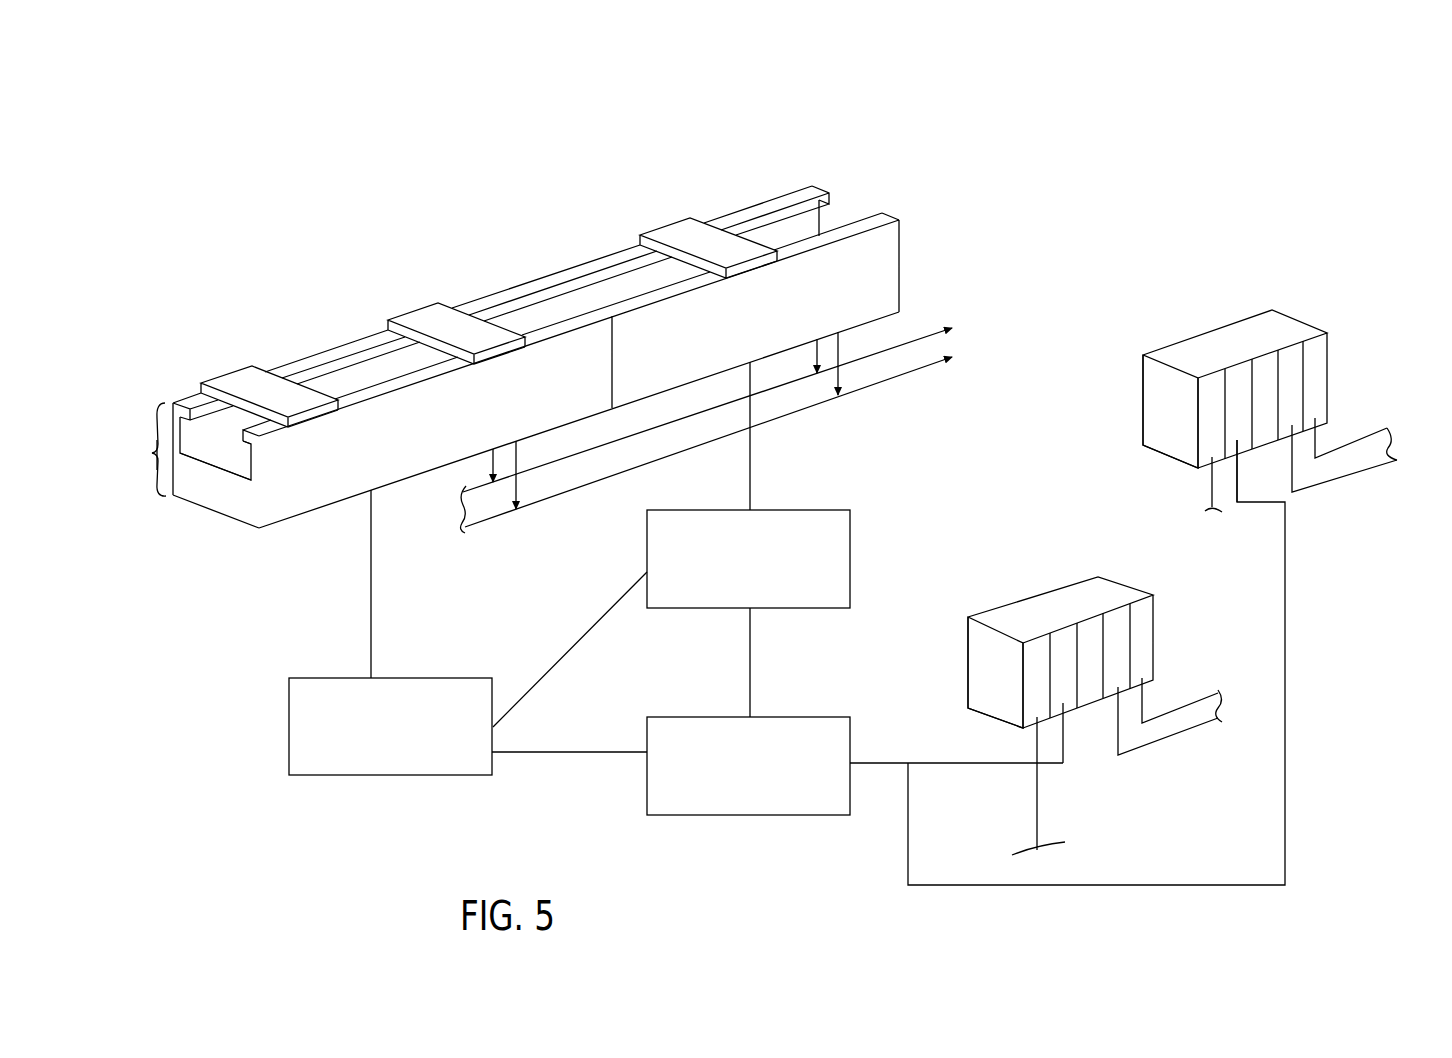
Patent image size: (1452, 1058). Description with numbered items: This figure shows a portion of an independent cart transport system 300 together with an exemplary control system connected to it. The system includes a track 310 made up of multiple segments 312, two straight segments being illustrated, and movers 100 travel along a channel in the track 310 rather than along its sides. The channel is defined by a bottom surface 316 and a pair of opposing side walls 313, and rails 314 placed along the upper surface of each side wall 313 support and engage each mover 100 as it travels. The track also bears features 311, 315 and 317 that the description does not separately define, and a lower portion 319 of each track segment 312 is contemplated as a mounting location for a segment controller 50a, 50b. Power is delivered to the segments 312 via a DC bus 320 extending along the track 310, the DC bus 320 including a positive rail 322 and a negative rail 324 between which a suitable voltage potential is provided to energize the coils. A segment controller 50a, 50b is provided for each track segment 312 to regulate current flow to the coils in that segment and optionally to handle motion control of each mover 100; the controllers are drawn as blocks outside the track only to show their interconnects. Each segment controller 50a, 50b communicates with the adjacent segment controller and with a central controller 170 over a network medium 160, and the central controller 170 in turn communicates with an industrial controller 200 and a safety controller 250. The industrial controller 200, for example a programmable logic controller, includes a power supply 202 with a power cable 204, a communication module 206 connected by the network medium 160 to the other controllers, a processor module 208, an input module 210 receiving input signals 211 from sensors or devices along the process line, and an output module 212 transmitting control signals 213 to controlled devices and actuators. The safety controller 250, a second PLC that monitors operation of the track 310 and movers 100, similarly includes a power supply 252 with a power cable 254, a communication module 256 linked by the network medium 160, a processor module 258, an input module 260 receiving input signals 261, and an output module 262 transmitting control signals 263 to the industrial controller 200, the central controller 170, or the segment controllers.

The independent cart transport system 300 is at (282, 240).
The track 310 is at (858, 135).
The track segment 311 is at (745, 344).
The track segment 312 is at (327, 357).
The side wall 313 is at (550, 310).
The rail 314 is at (308, 358).
The front lip 315 is at (815, 218).
The bottom surface 316 is at (236, 460).
The track end 317 is at (160, 428).
The lower portion 319 is at (158, 472).
The DC bus 320 is at (1005, 297).
The positive rail 322 is at (920, 337).
The negative rail 324 is at (920, 372).
The mover 100 is at (245, 372).
The segment controller 50a is at (400, 678).
The segment controller 50b is at (808, 508).
The network medium 160 is at (563, 652).
The central controller 170 is at (680, 815).
The industrial controller 200 is at (1030, 643).
The power supply 202 is at (1027, 643).
The power cable 204 is at (1048, 815).
The communication module 206 is at (1058, 643).
The processor module 208 is at (1093, 628).
The input module 210 is at (1117, 622).
The input signals 211 is at (1163, 740).
The output module 212 is at (1143, 610).
The control signals 213 is at (1182, 700).
The safety controller 250 is at (1207, 378).
The power supply 252 is at (1207, 378).
The power cable 254 is at (1210, 492).
The communication module 256 is at (1238, 377).
The processor module 258 is at (1270, 367).
The input module 260 is at (1293, 358).
The input signals 261 is at (1367, 467).
The output module 262 is at (1315, 347).
The control signals 263 is at (1355, 440).